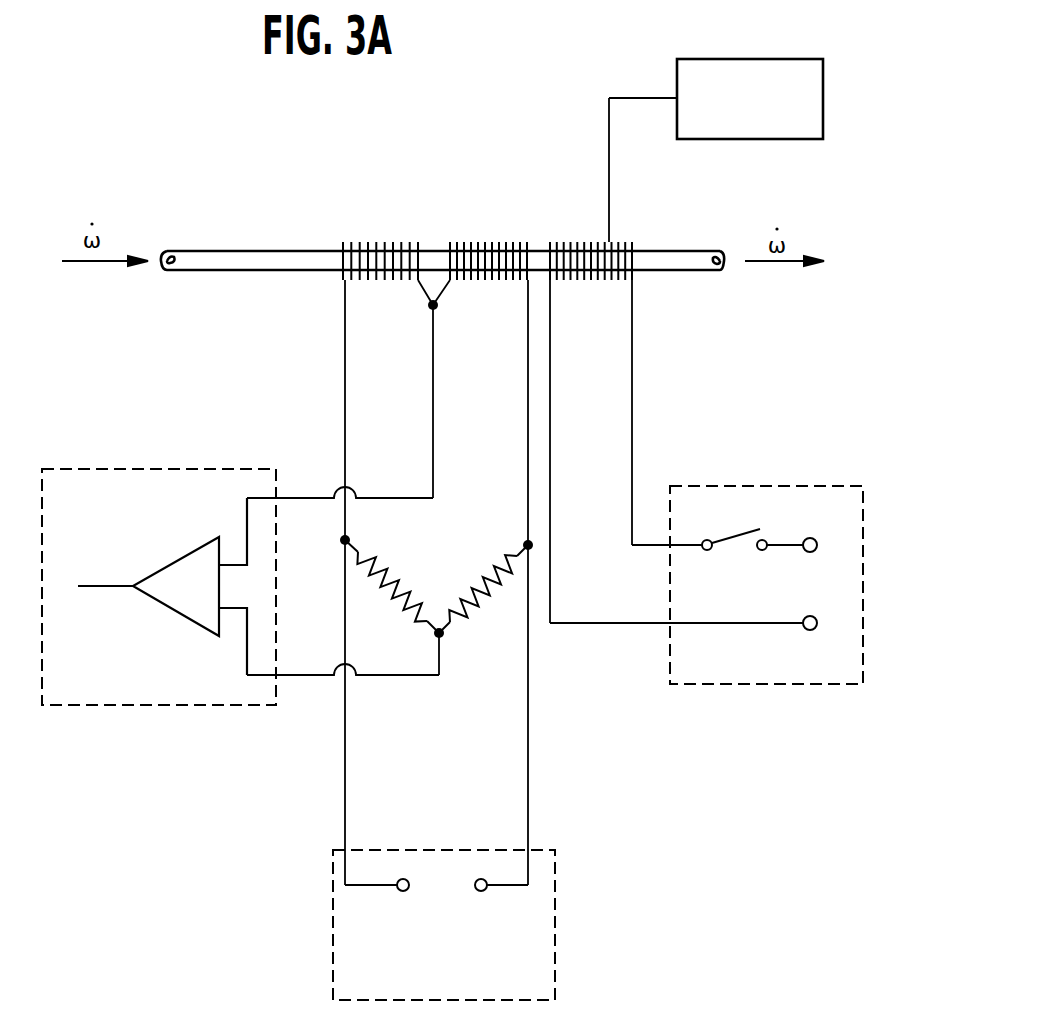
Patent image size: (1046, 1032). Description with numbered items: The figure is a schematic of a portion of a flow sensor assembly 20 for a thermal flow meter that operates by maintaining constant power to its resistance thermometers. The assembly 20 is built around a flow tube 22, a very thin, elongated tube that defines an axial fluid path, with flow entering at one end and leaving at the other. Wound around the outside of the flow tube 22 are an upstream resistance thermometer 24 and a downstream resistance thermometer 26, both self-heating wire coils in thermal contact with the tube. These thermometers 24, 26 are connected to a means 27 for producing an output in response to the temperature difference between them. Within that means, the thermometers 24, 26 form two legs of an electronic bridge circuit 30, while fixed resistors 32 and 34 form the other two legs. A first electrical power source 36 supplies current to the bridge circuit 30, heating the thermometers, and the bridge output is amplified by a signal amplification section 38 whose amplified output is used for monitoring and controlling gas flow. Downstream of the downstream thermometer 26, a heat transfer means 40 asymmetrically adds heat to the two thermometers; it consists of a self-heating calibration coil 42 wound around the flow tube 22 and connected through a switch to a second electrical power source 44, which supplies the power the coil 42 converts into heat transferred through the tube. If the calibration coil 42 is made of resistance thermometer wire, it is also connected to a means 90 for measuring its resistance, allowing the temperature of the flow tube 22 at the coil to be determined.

The flow sensor assembly 20 is at (305, 202).
The flow tube 22 is at (227, 262).
The upstream resistance thermometer 24 is at (390, 245).
The downstream resistance thermometer 26 is at (492, 242).
The means for producing an output in response to a temperature difference 27 is at (268, 886).
The electronic bridge circuit 30 is at (436, 644).
The fixed resistor 32 is at (470, 615).
The fixed resistor 34 is at (380, 585).
The first electrical power source 36 is at (545, 945).
The signal amplification section 38 is at (103, 697).
The heat transfer means 40 is at (774, 576).
The calibration coil 42 is at (580, 280).
The second electrical power source 44 is at (730, 676).
The means for measuring the resistance of the calibration coil 90 is at (790, 139).